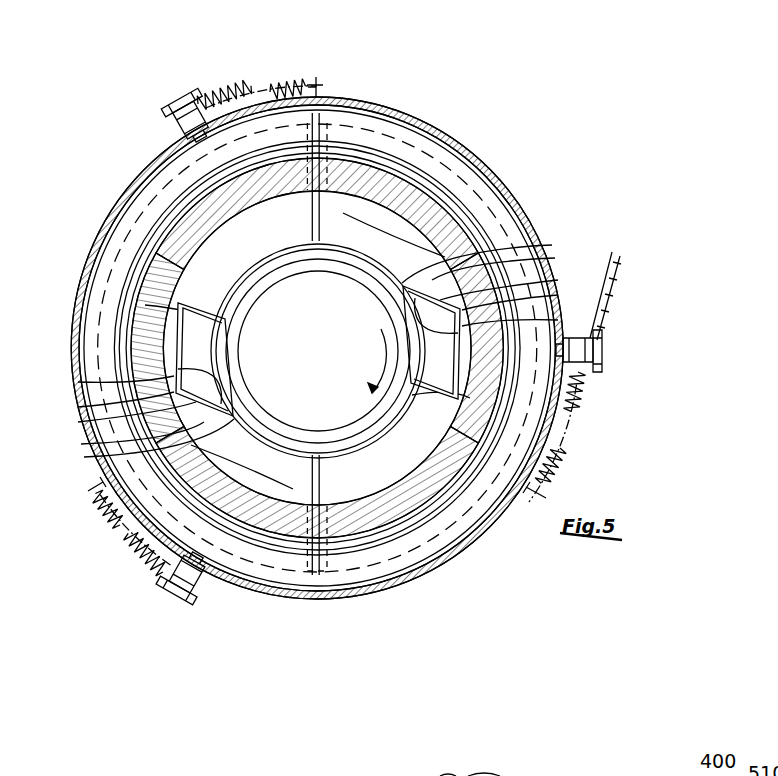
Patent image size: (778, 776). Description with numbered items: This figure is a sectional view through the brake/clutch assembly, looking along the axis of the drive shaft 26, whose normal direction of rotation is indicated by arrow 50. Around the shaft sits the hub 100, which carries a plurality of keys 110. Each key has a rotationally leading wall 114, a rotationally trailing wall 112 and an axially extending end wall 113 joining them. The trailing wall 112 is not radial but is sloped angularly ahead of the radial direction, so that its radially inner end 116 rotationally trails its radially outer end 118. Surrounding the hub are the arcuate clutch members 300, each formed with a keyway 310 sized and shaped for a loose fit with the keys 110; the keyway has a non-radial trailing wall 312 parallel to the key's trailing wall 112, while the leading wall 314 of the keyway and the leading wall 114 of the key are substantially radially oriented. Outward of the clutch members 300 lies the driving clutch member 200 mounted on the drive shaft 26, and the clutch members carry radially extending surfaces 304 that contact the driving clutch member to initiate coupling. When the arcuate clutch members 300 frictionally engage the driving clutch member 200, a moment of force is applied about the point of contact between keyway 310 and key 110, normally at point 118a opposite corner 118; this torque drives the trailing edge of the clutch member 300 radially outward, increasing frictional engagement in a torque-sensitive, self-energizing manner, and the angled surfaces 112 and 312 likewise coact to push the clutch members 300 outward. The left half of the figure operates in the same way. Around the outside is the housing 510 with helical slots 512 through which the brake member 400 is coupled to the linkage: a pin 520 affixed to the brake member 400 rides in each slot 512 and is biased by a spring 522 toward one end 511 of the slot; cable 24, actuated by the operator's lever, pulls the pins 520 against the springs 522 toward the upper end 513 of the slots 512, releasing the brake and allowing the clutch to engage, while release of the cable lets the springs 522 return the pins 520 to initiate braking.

The cable 24 is at (620, 254).
The drive shaft 26 is at (318, 351).
The arrow 50 is at (380, 352).
The hub 100 is at (240, 300).
The keys 110 is at (192, 378).
The rotationally trailing wall 112 is at (520, 253).
The axially extending end wall 113 is at (520, 290).
The rotationally leading wall 114 is at (170, 307).
The radially inner end 116 is at (513, 243).
The radially outer end 118 is at (520, 270).
The contact point 118a is at (549, 275).
The driving clutch member 200 is at (387, 182).
The arcuate clutch member 300 is at (343, 213).
The radially extending surface 304 is at (318, 344).
The keyway 310 is at (465, 350).
The trailing wall of keyway 312 is at (552, 300).
The rotationally leading wall of keyway 314 is at (205, 318).
The brake member 400 is at (452, 168).
The housing 510 is at (517, 197).
The one end of the slot 511 is at (237, 93).
The helical slot 512 is at (588, 345).
The upper end of slot 513 is at (165, 148).
The pin 520 is at (604, 352).
The spring 522 is at (582, 402).